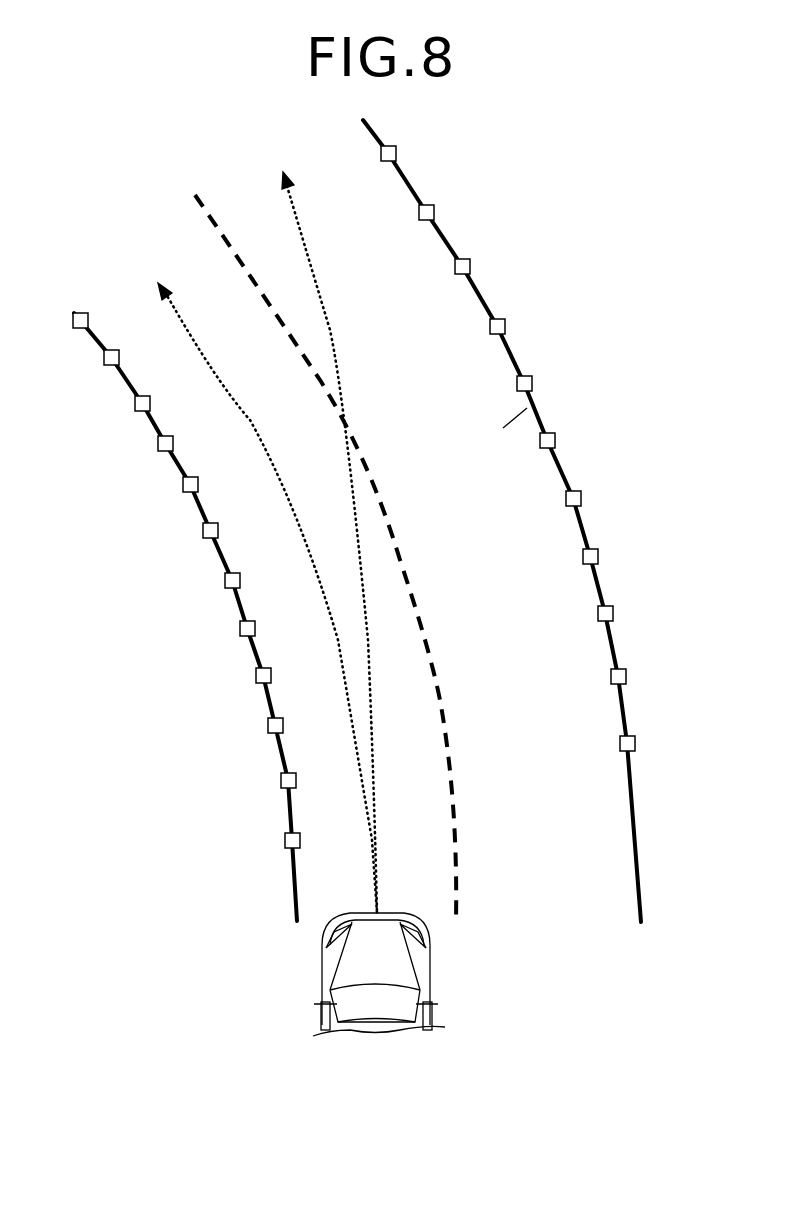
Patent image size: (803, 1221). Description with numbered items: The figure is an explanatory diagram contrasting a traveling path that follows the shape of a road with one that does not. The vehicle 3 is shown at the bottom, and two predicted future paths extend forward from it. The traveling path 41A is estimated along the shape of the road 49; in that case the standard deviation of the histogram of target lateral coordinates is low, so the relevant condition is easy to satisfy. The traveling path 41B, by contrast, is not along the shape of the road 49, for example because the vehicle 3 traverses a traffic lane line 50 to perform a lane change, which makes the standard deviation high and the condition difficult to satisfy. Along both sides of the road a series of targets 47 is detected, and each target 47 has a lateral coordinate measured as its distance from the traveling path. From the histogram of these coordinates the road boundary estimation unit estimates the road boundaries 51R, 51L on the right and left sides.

The vehicle 3 is at (432, 978).
The traveling path 41A is at (188, 333).
The traveling path 41B is at (298, 224).
The target 47 is at (203, 530).
The road 49 is at (527, 408).
The traffic lane line 50 is at (400, 545).
The road boundary 51L is at (262, 698).
The road boundary 51R is at (560, 468).